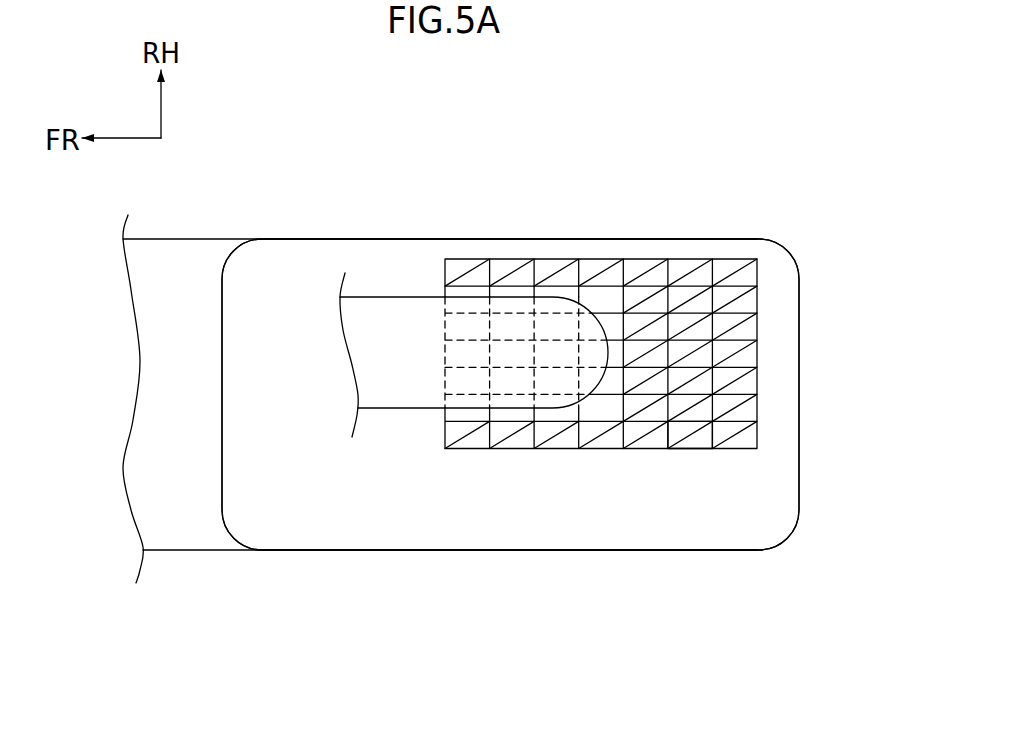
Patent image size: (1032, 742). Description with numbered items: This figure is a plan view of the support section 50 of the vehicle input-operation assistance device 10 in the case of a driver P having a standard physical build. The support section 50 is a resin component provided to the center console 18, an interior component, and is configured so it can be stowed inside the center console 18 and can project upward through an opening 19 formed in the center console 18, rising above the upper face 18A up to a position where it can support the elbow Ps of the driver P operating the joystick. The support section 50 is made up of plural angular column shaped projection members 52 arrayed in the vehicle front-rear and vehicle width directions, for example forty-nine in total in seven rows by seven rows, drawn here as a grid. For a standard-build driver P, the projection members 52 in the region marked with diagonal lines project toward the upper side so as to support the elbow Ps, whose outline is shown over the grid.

The vehicle input-operation assistance device 10 is at (748, 218).
The center console 18 is at (800, 383).
The upper face 18A is at (482, 502).
The opening 19 is at (694, 444).
The support section 50 is at (673, 258).
The projection member 52 is at (548, 267).
The driver P is at (407, 297).
The elbow Ps is at (493, 296).